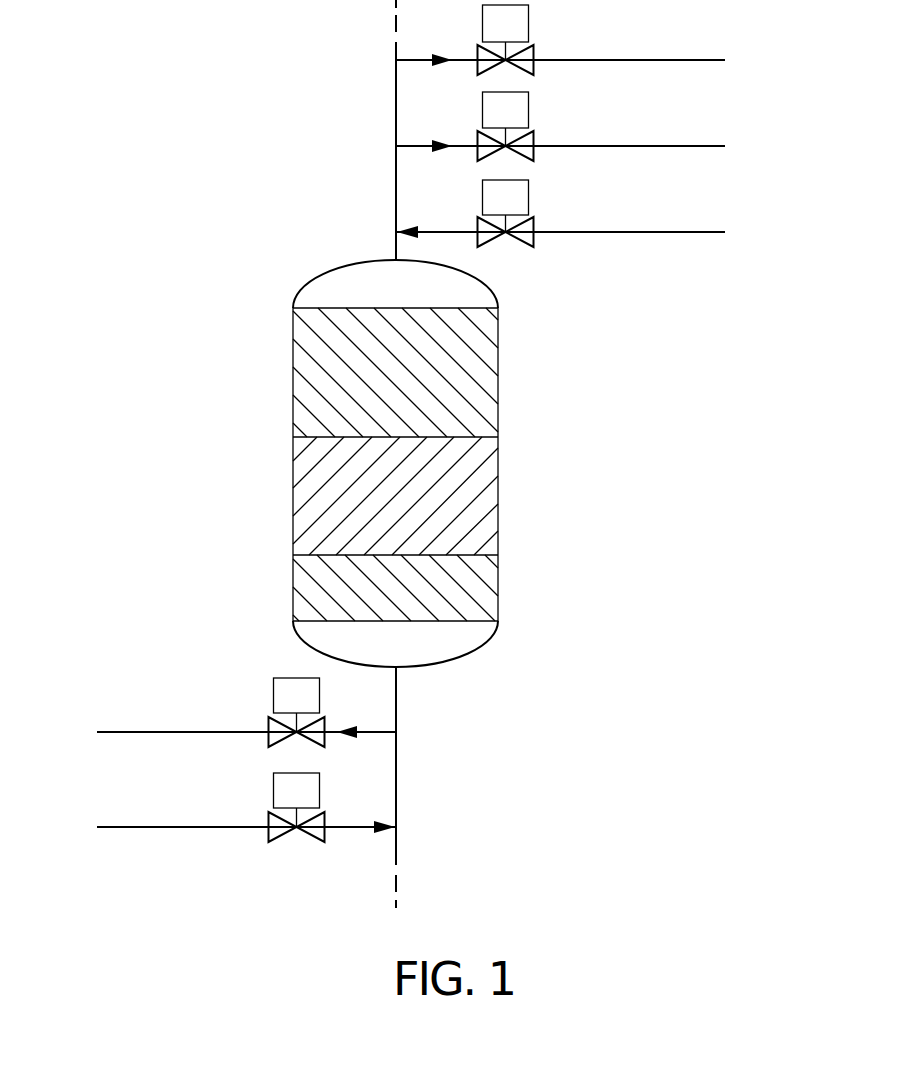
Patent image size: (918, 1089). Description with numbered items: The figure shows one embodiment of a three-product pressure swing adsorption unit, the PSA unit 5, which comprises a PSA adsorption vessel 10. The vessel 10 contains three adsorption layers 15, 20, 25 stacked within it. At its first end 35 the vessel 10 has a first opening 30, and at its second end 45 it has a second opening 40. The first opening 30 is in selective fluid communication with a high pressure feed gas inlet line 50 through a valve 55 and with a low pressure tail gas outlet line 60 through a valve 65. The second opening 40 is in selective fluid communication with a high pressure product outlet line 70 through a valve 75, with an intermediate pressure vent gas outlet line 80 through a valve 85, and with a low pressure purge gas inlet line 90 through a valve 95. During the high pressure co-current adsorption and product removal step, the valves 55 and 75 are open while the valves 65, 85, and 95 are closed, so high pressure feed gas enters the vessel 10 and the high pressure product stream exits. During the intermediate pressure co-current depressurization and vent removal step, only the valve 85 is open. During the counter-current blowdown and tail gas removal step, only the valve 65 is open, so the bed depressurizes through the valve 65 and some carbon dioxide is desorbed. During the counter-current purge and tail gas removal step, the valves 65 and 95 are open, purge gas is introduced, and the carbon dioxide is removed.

The PSA unit 5 is at (190, 98).
The PSA adsorption vessel 10 is at (400, 468).
The adsorption layer 15 is at (293, 364).
The adsorption layer 20 is at (293, 486).
The adsorption layer 25 is at (293, 581).
The first opening 30 is at (398, 670).
The first end 35 is at (474, 654).
The second opening 40 is at (393, 259).
The second end 45 is at (313, 281).
The high pressure feed gas inlet line 50 is at (117, 827).
The valve 55 is at (273, 789).
The low pressure tail gas outlet line 60 is at (117, 732).
The valve 65 is at (273, 694).
The high pressure product outlet line 70 is at (703, 60).
The valve 75 is at (482, 22).
The intermediate pressure vent gas outlet line 80 is at (703, 146).
The valve 85 is at (482, 108).
The low pressure purge gas inlet line 90 is at (703, 232).
The valve 95 is at (482, 193).